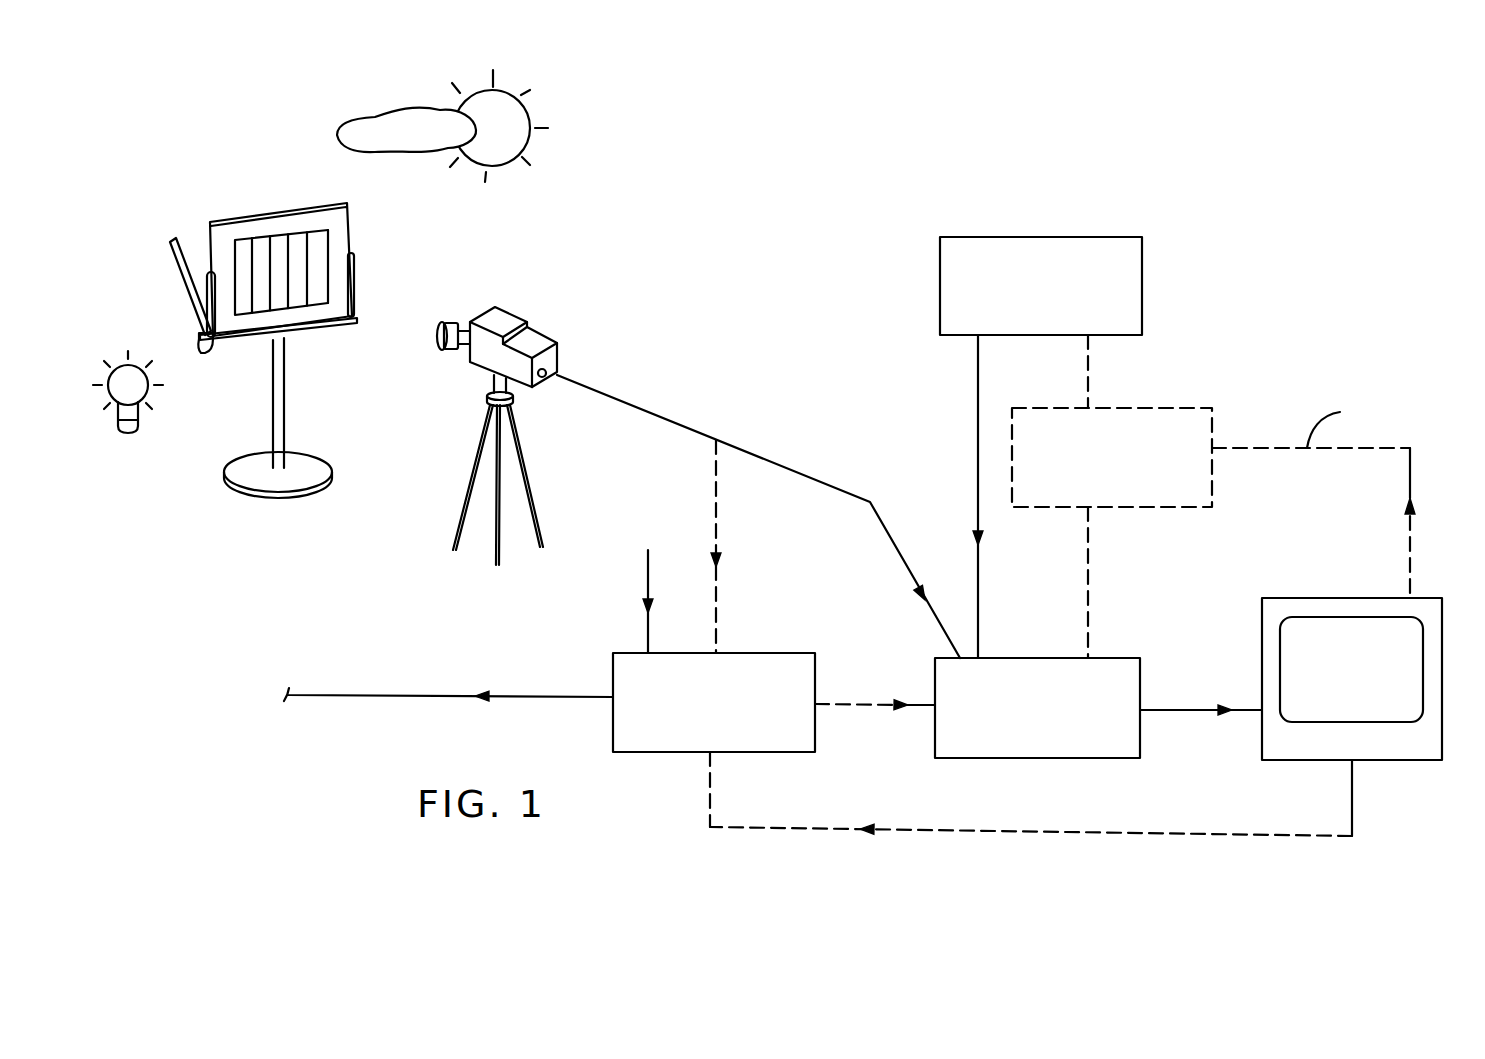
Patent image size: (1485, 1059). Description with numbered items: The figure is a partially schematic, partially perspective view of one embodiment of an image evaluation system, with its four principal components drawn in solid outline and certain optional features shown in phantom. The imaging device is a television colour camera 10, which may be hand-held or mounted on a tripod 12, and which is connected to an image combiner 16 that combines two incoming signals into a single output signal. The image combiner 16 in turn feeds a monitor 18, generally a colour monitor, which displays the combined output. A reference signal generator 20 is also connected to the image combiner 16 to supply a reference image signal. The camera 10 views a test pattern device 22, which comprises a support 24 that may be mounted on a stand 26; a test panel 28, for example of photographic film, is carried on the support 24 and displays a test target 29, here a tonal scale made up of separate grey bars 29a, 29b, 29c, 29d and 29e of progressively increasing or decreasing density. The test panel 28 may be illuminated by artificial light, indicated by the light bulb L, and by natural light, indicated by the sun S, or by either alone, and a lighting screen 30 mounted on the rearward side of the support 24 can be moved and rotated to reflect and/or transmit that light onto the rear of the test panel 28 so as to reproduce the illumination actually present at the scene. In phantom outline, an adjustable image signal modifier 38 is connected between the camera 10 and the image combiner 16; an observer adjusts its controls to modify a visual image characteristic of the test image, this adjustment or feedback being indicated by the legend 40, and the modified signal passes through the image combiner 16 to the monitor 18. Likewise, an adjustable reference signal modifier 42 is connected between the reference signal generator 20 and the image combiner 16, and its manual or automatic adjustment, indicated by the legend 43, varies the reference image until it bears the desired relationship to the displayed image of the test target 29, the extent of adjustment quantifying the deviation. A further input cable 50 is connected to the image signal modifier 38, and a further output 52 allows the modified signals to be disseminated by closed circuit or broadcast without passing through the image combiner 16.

The television colour camera 10 is at (531, 296).
The tripod 12 is at (472, 457).
The image combiner 16 is at (1120, 658).
The monitor 18 is at (1322, 598).
The reference signal generator 20 is at (1007, 237).
The test pattern device 22 is at (313, 275).
The support 24 is at (213, 350).
The stand 26 is at (273, 410).
The test panel 28 is at (337, 222).
The test target 29 is at (319, 275).
The grey bar 29a is at (243, 260).
The grey bar 29b is at (262, 260).
The grey bar 29c is at (280, 307).
The grey bar 29d is at (307, 298).
The grey bar 29e is at (317, 293).
The lighting screen 30 is at (187, 252).
The adjustable image signal modifier 38 is at (780, 652).
The feedback 40 is at (1217, 835).
The adjustable reference signal modifier 42 is at (1173, 408).
The feedback 43 is at (1410, 490).
The input cable 50 is at (647, 585).
The output 52 is at (433, 697).
The light bulb L is at (117, 333).
The sun S is at (556, 115).